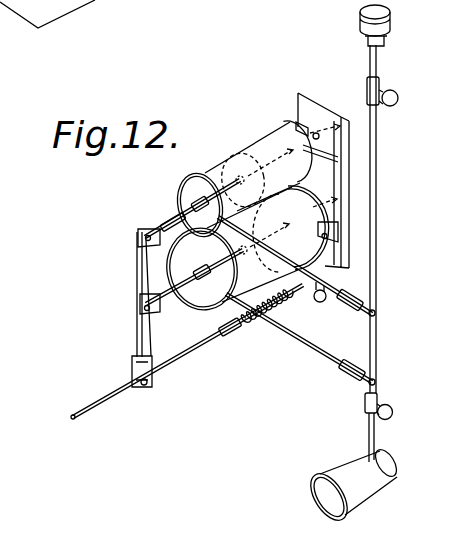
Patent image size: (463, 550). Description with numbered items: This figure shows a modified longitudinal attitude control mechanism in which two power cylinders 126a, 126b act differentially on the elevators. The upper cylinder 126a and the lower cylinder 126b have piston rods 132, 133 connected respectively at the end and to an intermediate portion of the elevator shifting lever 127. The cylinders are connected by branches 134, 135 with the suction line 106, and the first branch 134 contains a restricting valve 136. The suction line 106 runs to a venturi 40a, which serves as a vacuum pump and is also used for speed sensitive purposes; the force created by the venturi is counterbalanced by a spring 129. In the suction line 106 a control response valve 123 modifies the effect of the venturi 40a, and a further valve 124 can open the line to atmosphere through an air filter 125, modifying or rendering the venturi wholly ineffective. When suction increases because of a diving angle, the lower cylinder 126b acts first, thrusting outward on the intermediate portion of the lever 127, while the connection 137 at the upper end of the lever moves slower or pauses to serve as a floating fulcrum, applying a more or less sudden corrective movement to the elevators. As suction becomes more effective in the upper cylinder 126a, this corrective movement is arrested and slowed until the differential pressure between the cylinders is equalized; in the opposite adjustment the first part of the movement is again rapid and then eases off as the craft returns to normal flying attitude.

The suction line 106 is at (378, 195).
The control response valve 123 is at (383, 401).
The valve 124 is at (386, 86).
The air filter 125 is at (389, 25).
The upper power cylinder 126a is at (257, 145).
The lower power cylinder 126b is at (212, 313).
The elevator shifting lever 127 is at (137, 336).
The spring 129 is at (260, 331).
The piston rod 132 is at (176, 219).
The piston rod 133 is at (165, 290).
The branch 134 is at (363, 302).
The branch 135 is at (312, 344).
The restricting valve 136 is at (320, 303).
The connection 137 is at (139, 237).
The venturi 40a is at (352, 473).